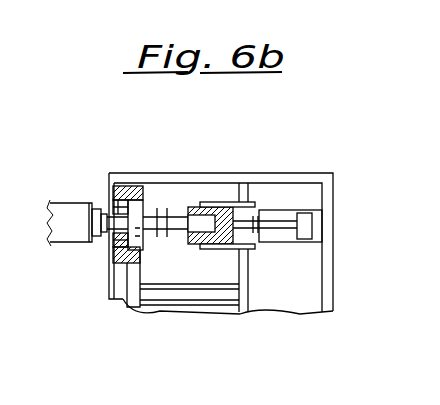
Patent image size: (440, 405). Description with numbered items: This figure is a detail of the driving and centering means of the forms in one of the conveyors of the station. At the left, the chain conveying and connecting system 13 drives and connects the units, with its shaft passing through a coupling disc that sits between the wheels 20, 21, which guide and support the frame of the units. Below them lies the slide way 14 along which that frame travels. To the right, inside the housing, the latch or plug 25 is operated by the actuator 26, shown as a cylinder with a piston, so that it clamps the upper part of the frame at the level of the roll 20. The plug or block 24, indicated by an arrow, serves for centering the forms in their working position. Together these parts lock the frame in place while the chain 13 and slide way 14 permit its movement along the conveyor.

The chain conveying and connecting system 13 is at (174, 240).
The slide way 14 is at (125, 264).
The wheel 20 is at (137, 192).
The wheel 21 is at (112, 257).
The plug or block 24 is at (257, 254).
The latch or plug 25 is at (222, 204).
The actuator 26 is at (290, 211).